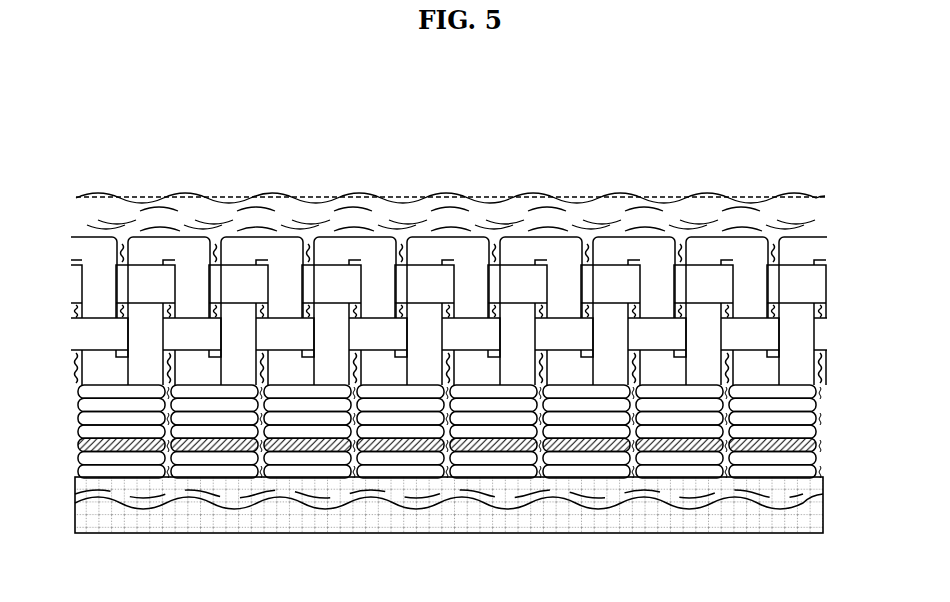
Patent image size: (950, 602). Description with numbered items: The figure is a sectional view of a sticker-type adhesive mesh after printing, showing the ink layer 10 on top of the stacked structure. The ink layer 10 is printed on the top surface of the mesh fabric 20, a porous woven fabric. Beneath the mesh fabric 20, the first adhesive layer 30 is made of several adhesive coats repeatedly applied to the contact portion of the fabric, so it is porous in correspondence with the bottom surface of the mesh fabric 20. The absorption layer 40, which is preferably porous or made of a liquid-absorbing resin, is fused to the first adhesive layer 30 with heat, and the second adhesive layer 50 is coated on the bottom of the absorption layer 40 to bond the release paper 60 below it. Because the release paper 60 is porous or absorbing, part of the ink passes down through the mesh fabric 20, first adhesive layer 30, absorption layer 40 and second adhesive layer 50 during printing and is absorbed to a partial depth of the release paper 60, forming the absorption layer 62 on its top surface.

The ink layer 10 is at (157, 210).
The mesh fabric 20 is at (45, 378).
The first adhesive layer 30 is at (45, 385).
The absorption layer 40 is at (823, 445).
The second adhesive layer 50 is at (78, 470).
The release paper 60 is at (823, 516).
The absorption layer 62 is at (462, 495).